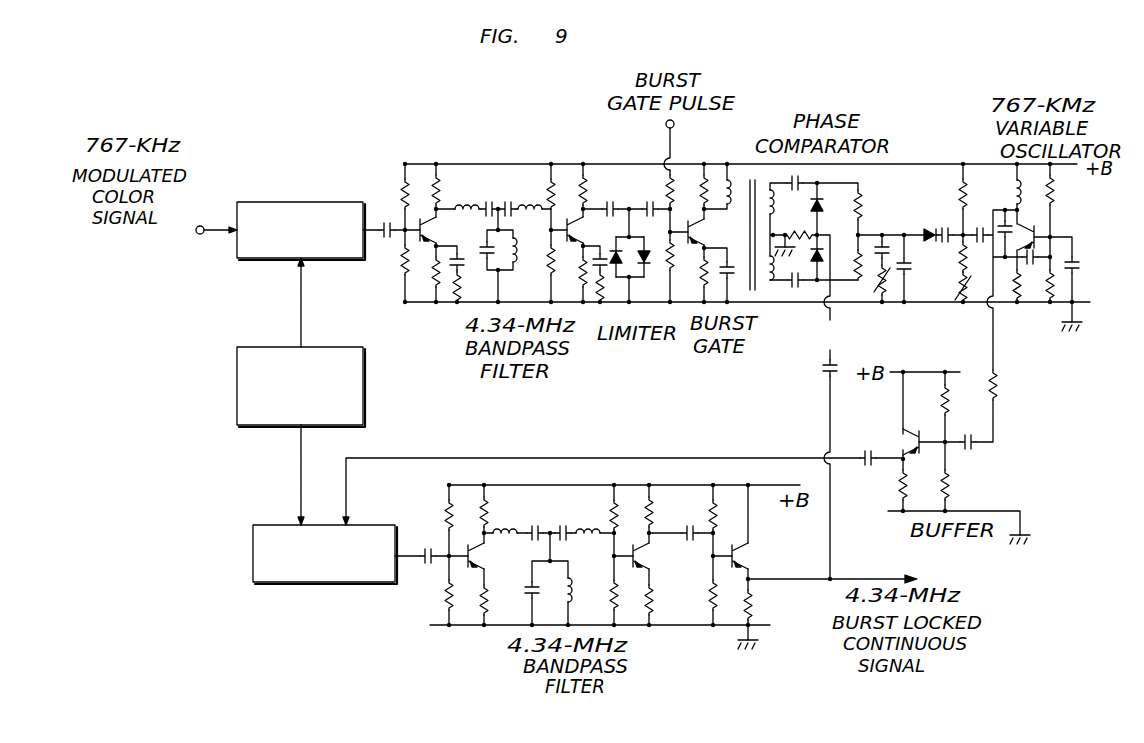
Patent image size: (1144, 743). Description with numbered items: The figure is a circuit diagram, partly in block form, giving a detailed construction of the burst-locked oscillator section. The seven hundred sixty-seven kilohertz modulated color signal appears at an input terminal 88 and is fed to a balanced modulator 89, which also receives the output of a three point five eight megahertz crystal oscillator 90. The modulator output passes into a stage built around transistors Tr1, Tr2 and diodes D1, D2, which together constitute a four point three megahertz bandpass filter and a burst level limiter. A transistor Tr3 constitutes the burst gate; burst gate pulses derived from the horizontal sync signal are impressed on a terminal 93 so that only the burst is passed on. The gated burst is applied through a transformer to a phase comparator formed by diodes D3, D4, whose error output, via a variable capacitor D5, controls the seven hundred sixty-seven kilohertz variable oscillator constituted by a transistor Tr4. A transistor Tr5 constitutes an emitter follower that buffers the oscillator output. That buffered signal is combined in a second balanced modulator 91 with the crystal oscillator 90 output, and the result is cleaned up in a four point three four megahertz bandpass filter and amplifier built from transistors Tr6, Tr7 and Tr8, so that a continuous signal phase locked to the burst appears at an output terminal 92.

The input terminal 88 is at (199, 234).
The balanced modulator 89 is at (297, 202).
The 3.58-MHz crystal oscillator 90 is at (262, 347).
The balanced modulator 91 is at (267, 525).
The output terminal 92 is at (832, 564).
The terminal 93 is at (674, 126).
The transistor Tr1 is at (428, 234).
The transistor Tr2 is at (574, 234).
The transistor Tr3 is at (695, 236).
The transistor Tr4 is at (1040, 232).
The transistor Tr5 is at (906, 439).
The transistor Tr6 is at (476, 561).
The transistor Tr7 is at (641, 561).
The transistor Tr8 is at (740, 561).
The diode D1 is at (616, 248).
The diode D2 is at (644, 248).
The diode D3 is at (812, 206).
The diode D4 is at (817, 263).
The variable capacitor D5 is at (930, 232).